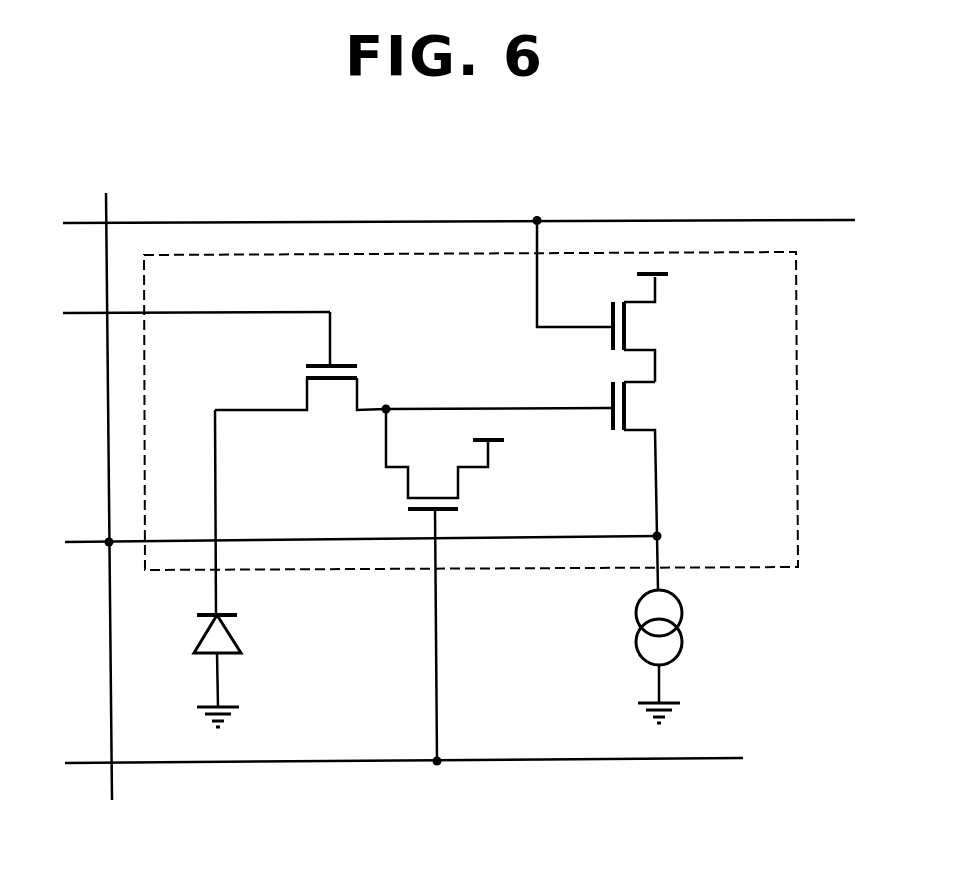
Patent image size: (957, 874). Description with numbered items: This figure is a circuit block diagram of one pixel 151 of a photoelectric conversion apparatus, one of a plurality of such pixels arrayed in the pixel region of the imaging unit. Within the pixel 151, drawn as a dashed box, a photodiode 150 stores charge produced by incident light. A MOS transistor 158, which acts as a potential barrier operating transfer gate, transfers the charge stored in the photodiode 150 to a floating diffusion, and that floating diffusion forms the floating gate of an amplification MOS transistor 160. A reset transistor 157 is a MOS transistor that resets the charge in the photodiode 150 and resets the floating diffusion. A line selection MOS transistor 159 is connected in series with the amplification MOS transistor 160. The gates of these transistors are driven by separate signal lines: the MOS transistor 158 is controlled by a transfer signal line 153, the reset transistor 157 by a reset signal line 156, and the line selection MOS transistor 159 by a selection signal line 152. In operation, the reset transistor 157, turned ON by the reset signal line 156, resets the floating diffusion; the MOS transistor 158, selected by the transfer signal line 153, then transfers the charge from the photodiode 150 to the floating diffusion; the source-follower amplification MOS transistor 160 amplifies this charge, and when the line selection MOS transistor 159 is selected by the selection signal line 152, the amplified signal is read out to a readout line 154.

The photodiode 150 is at (235, 625).
The pixel 151 is at (803, 258).
The selection signal line 152 is at (497, 220).
The transfer signal line 153 is at (83, 317).
The readout line 154 is at (103, 512).
The reset signal line 156 is at (167, 765).
The reset transistor 157 is at (465, 492).
The MOS transistor 158 is at (298, 377).
The line selection MOS transistor 159 is at (647, 322).
The amplification MOS transistor 160 is at (647, 403).